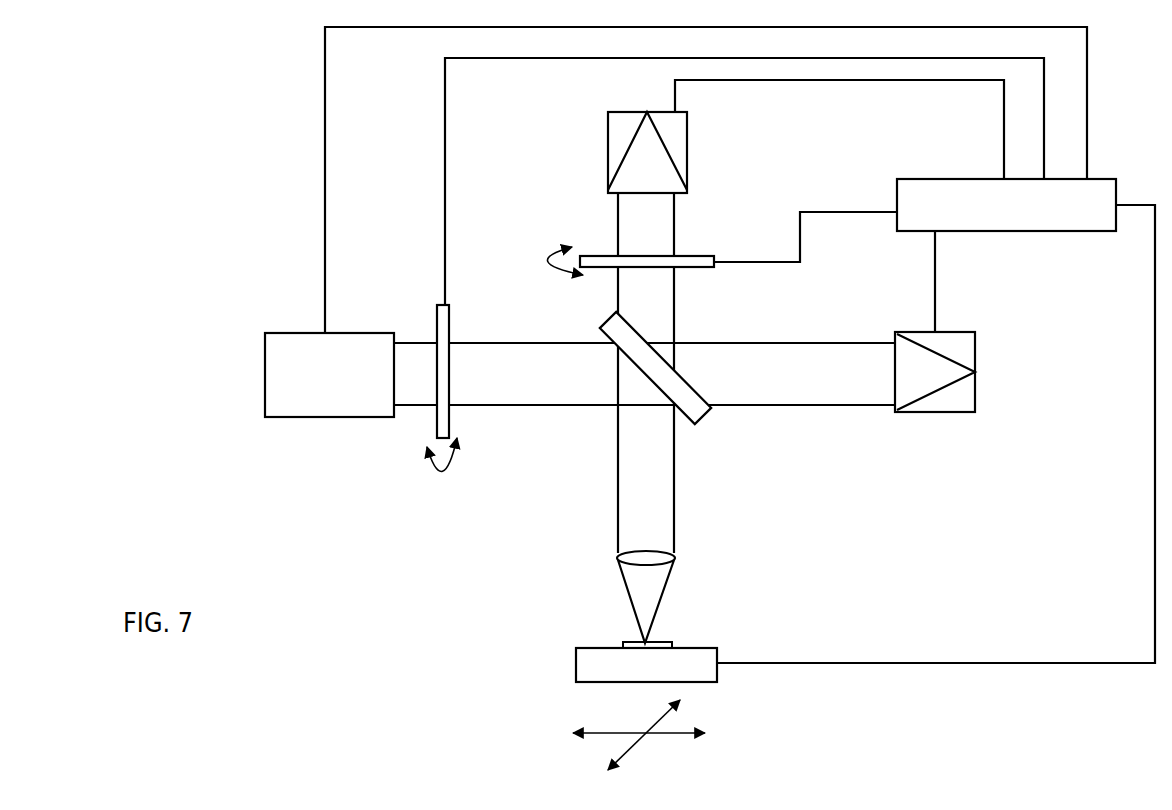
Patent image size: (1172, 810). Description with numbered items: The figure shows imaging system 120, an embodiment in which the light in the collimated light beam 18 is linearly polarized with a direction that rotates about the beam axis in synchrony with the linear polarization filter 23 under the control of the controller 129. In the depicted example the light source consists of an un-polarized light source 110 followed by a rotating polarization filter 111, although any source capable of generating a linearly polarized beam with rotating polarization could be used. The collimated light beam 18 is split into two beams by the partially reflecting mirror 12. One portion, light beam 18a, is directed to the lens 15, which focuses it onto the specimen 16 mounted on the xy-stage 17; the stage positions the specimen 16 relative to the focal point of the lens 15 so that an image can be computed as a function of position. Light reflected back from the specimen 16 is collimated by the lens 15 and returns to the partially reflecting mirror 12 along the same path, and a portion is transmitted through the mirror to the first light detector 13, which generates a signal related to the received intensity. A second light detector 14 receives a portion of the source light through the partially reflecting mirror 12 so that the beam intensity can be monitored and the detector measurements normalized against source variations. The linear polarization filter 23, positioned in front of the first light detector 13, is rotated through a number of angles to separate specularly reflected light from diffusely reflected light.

The imaging system 120 is at (228, 197).
The un-polarized light source 110 is at (287, 412).
The rotating polarization filter 111 is at (437, 327).
The first light detector 13 is at (688, 152).
The linear polarization filter 23 is at (702, 252).
The collimated light beam 18 is at (540, 348).
The light beam 18a is at (625, 463).
The partially reflecting mirror 12 is at (700, 417).
The controller 129 is at (1050, 235).
The second light detector 14 is at (973, 397).
The lens 15 is at (675, 562).
The specimen 16 is at (633, 642).
The xy-stage 17 is at (580, 660).